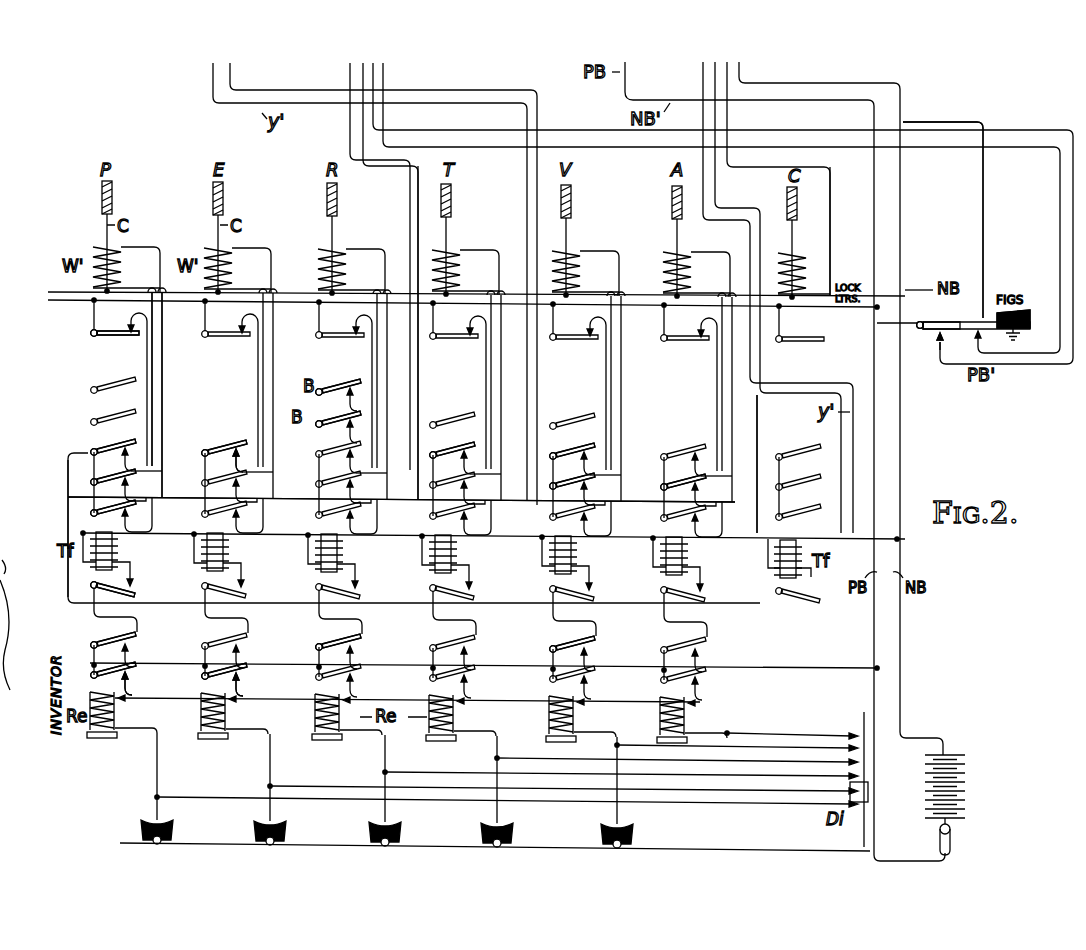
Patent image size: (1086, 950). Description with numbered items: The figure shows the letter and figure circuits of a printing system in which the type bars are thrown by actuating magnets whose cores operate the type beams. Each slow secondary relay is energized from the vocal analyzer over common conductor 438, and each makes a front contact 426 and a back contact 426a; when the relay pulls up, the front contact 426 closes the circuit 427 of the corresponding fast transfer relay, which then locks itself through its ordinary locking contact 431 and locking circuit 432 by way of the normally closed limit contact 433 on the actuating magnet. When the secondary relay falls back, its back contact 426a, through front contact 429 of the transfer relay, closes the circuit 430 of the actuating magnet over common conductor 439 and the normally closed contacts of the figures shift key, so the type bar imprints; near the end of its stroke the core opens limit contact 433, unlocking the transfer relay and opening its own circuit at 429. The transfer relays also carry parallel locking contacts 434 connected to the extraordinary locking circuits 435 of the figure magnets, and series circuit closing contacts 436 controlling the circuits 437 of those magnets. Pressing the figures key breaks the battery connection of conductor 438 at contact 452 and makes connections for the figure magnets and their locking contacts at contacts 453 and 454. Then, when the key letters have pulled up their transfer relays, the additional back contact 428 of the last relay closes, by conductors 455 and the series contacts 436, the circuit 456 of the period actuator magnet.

The front contact 426 is at (130, 695).
The back contact 426a is at (135, 674).
The transfer relay circuit 427 is at (150, 617).
The additional back contact 428 is at (88, 644).
The front contact 429 is at (88, 585).
The actuating magnet circuit 430 is at (160, 358).
The ordinary locking contact 431 is at (87, 513).
The locking circuit 432 is at (160, 376).
The normally closed limit contact 433 is at (90, 333).
The parallel locking contact 434 is at (88, 481).
The extraordinary locking circuit 435 is at (182, 497).
The series circuit closing contact 436 is at (88, 451).
The figure actuating magnet circuit 437 is at (253, 440).
The common conductor 438 is at (755, 613).
The common conductor 439 is at (848, 207).
The figures key contact 452 is at (927, 326).
The figures key contact 453 is at (985, 340).
The figures key contact 454 is at (937, 352).
The conductor 455 is at (35, 505).
The period actuator circuit 456 is at (415, 355).